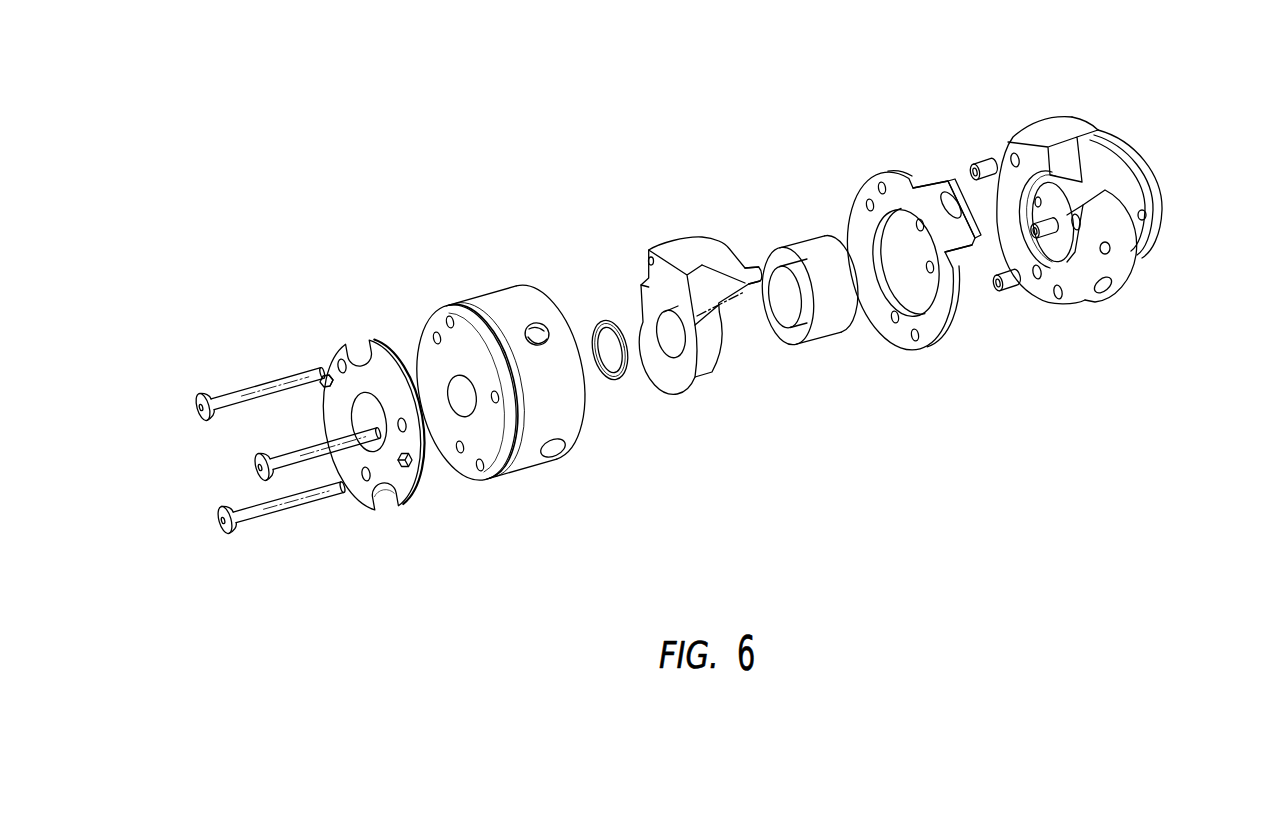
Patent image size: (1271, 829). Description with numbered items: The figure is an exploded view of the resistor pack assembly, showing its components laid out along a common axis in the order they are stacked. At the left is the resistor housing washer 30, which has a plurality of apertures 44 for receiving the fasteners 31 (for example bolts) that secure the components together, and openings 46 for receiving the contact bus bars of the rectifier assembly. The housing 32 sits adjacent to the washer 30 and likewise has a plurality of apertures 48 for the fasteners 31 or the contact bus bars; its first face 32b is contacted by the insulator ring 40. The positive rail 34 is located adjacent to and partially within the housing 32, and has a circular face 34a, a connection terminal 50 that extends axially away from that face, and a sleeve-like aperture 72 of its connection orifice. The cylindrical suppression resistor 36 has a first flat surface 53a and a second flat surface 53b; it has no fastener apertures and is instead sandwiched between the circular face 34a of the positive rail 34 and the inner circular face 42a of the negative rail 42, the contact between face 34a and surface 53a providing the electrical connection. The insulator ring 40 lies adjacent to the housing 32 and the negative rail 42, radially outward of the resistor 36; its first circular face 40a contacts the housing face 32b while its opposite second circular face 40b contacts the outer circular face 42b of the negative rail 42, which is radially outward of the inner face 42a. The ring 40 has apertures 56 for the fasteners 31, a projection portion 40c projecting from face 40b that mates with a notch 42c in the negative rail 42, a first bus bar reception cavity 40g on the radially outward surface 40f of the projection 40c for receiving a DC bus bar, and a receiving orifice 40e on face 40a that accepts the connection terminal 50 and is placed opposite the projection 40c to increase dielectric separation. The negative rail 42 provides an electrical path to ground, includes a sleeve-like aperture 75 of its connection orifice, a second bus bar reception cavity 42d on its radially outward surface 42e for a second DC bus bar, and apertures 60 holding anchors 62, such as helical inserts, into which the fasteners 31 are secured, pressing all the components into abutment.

The resistor housing washer 30 is at (334, 448).
The fasteners 31 is at (200, 398).
The housing 32 is at (514, 391).
The first face of the housing 32b is at (586, 425).
The positive rail 34 is at (681, 317).
The circular face 34a is at (726, 329).
The cylindrical suppression resistor 36 is at (819, 293).
The insulator ring 40 is at (947, 264).
The first circular face 40a is at (936, 342).
The second circular face 40b is at (958, 292).
The projection portion 40c is at (943, 184).
The receiving orifice 40e is at (913, 188).
The radially outward surface 40f is at (956, 244).
The first bus bar reception cavity 40g is at (947, 199).
The negative rail 42 is at (1106, 206).
The inner circular face 42a is at (1045, 268).
The outer circular face 42b is at (1082, 288).
The notch 42c is at (1104, 192).
The second bus bar reception cavity 42d is at (1118, 302).
The radially outward surface 42e is at (1114, 229).
The apertures 44 is at (367, 480).
The openings 46 is at (390, 498).
The apertures 48 is at (436, 334).
The connection terminal 50 is at (747, 262).
The first flat surface 53a is at (784, 339).
The second flat surface 53b is at (836, 322).
The apertures 56 is at (867, 202).
The apertures 60 is at (1012, 154).
The anchors 62 is at (984, 163).
The sleeve-like aperture 72 is at (649, 259).
The sleeve-like aperture 75 is at (1057, 298).